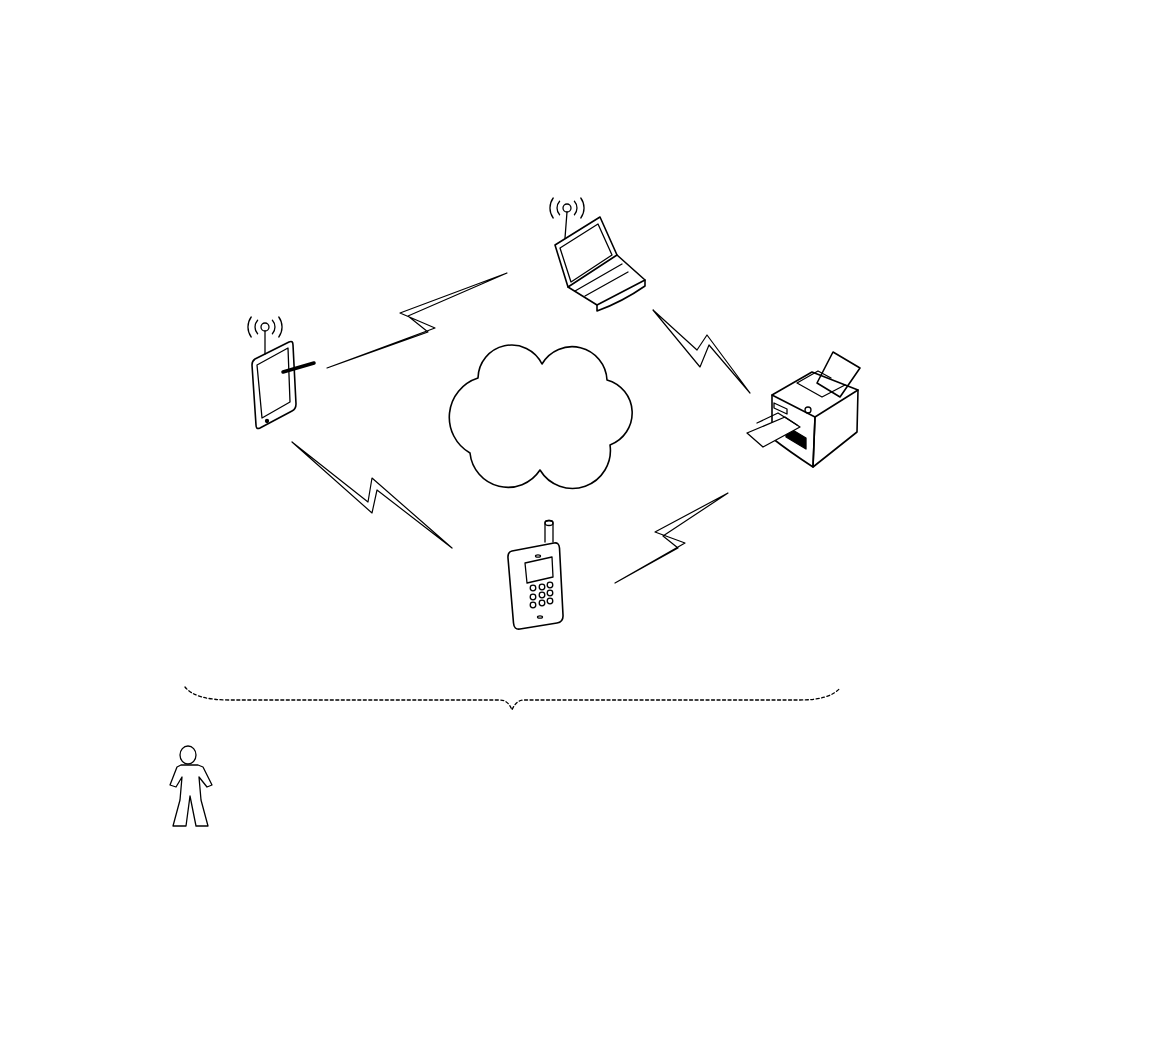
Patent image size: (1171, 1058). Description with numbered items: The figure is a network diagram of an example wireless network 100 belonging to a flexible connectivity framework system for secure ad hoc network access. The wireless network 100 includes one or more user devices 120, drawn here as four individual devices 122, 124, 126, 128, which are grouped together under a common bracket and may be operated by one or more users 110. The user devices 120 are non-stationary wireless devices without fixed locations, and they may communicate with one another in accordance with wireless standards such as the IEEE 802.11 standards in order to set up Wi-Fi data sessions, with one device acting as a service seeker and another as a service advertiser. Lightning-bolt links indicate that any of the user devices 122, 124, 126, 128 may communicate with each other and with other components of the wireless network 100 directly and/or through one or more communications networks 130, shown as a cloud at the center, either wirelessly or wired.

The wireless network 100 is at (1066, 72).
The user(s) 110 is at (191, 800).
The user device(s) 120 is at (509, 475).
The user device 122 is at (762, 445).
The user device 124 is at (562, 296).
The user device 126 is at (253, 424).
The user device 128 is at (508, 624).
The communications network(s) 130 is at (540, 416).